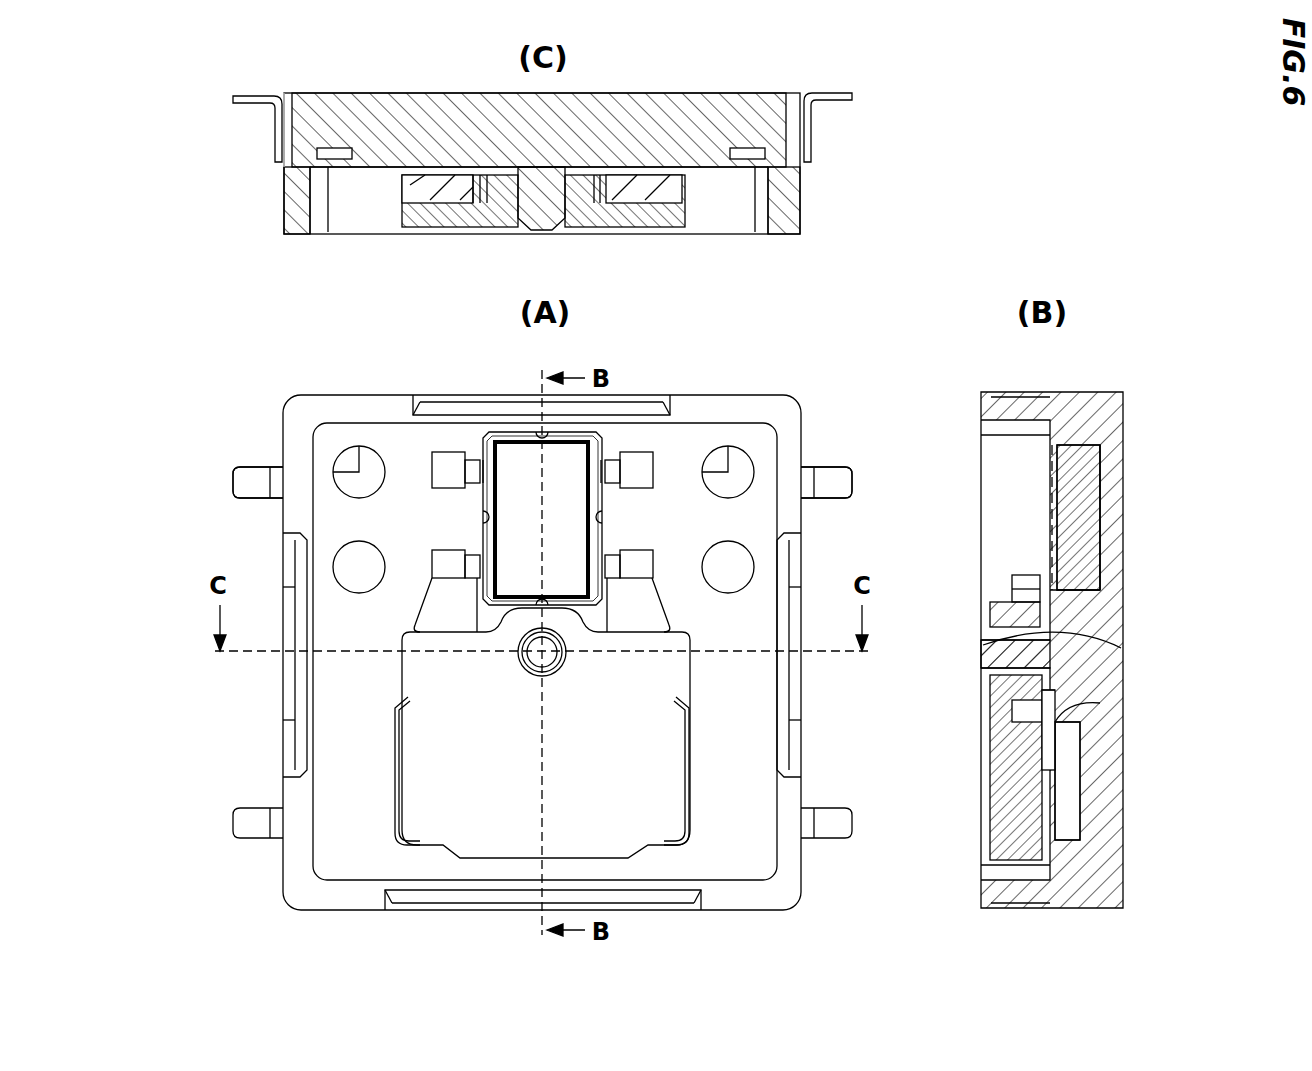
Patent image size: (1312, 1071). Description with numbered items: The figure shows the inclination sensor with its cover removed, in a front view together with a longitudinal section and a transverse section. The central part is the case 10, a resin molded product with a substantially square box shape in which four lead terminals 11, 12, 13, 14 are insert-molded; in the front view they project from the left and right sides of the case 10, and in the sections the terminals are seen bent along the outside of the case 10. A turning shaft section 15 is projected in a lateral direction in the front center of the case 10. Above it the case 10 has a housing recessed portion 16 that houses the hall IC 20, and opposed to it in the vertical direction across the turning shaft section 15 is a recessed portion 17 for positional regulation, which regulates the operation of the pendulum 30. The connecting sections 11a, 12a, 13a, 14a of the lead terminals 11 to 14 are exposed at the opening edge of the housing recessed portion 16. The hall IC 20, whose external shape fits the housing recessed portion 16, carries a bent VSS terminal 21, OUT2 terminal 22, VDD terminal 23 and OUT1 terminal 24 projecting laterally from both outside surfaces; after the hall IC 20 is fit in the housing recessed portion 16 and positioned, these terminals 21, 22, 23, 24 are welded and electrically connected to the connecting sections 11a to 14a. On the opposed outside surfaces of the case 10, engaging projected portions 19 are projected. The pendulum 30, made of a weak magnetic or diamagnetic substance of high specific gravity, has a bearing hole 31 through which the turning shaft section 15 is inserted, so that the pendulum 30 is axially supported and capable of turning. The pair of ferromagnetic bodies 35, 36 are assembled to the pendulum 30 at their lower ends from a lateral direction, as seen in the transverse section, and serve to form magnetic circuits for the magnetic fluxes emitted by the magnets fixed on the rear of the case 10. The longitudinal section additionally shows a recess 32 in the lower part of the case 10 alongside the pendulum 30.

The case 10 is at (676, 117).
The lead terminal 11 is at (243, 485).
The connecting section 11a is at (447, 470).
The lead terminal 12 is at (232, 99).
The connecting section 12a is at (447, 563).
The lead terminal 13 is at (833, 478).
The connecting section 13a is at (640, 470).
The lead terminal 14 is at (853, 98).
The connecting section 14a is at (637, 563).
The turning shaft section 15 is at (540, 223).
The housing recessed portion 16 is at (1105, 548).
The recessed portion for positional regulation 17 is at (400, 772).
The engaging projected portion 19 is at (296, 190).
The hall IC 20 is at (518, 460).
The VSS terminal 21 is at (470, 472).
The OUT2 terminal 22 is at (473, 565).
The VDD terminal 23 is at (612, 472).
The OUT1 terminal 24 is at (612, 565).
The pendulum 30 is at (430, 222).
The bearing hole 31 is at (1050, 606).
The recess 32 is at (1055, 785).
The ferromagnetic body 35 is at (410, 193).
The ferromagnetic body 36 is at (680, 190).